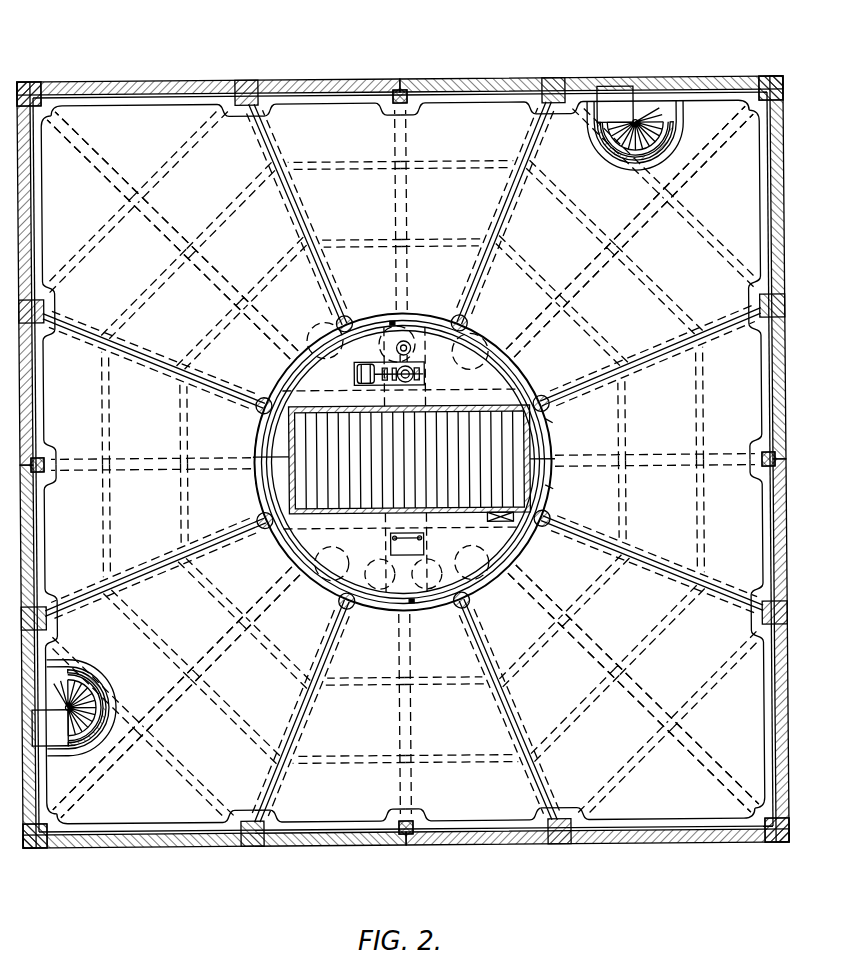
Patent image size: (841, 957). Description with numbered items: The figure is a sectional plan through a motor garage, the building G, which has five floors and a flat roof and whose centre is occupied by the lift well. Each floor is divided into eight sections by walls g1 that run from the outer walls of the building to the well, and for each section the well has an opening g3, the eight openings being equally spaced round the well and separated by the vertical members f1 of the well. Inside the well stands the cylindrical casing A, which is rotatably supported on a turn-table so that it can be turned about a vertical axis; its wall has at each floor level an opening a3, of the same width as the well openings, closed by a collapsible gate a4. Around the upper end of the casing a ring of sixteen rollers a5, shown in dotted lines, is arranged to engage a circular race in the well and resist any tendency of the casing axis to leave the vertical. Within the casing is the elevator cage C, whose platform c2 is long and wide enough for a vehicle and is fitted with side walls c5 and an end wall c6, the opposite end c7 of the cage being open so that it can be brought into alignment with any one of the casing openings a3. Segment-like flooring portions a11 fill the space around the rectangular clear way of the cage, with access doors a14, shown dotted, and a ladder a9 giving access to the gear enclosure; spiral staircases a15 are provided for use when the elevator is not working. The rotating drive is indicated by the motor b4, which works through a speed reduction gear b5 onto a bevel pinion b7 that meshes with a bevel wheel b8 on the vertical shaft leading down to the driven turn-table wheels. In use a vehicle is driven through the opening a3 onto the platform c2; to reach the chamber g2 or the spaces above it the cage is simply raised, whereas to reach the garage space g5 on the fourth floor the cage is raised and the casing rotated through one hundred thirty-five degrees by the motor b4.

The building G is at (403, 466).
The walls g1 is at (403, 462).
The chamber g2 is at (403, 462).
The opening g3 is at (396, 470).
The garage space g5 is at (403, 462).
The vertical members f1 is at (407, 464).
The casing A is at (409, 462).
The opening a3 is at (572, 483).
The collapsible gate a4 is at (568, 415).
The rollers a5 is at (398, 455).
The ladder a9 is at (388, 554).
The segment-like flooring portions a11 is at (378, 489).
The access doors a14 is at (391, 480).
The spiral staircases a15 is at (358, 401).
The elevator cage C is at (402, 391).
The platform c2 is at (410, 529).
The side walls c5 is at (410, 459).
The end wall c6 is at (248, 448).
The open end of the cage c7 is at (592, 441).
The motor b4 is at (346, 379).
The speed reduction gear b5 is at (424, 369).
The bevel pinion b7 is at (383, 364).
The bevel wheel b8 is at (416, 324).